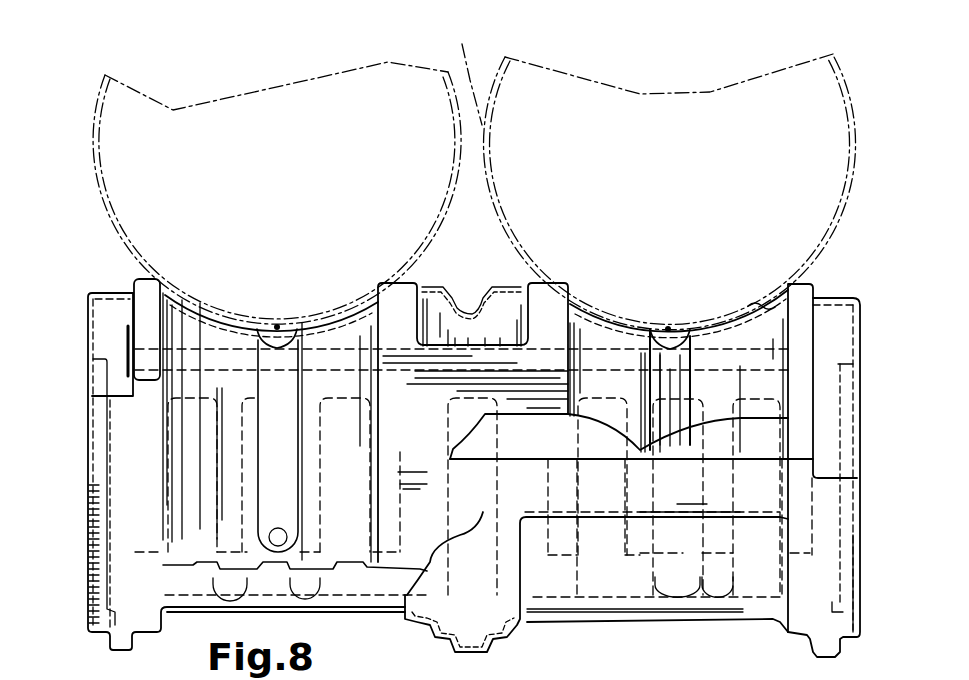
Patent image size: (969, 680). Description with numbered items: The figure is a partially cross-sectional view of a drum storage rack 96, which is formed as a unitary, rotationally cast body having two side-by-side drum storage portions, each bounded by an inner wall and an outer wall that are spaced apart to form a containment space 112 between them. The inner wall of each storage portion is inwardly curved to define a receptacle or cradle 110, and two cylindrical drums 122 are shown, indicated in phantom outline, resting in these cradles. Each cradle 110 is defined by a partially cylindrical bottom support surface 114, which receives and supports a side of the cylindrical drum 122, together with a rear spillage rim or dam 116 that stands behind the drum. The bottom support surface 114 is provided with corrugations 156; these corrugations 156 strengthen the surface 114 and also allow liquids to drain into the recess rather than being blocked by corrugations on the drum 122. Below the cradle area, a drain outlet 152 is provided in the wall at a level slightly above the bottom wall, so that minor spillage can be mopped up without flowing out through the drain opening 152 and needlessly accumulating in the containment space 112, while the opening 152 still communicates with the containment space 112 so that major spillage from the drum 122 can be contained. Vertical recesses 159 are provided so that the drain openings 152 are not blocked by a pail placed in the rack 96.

The drum storage rack 96 is at (84, 447).
The cylindrical drum 122 is at (474, 171).
The rear spillage rim or dam 116 is at (595, 302).
The cradle 110 is at (728, 314).
The corrugations 156 is at (760, 309).
The partially cylindrical bottom support surface 114 is at (696, 326).
The vertical recesses 159 is at (291, 485).
The drain outlet 152 is at (284, 533).
The containment space 112 is at (380, 585).